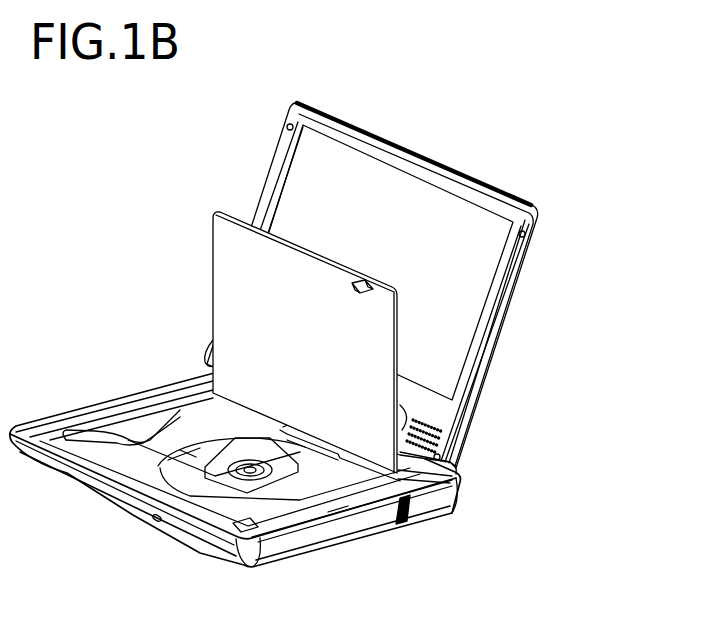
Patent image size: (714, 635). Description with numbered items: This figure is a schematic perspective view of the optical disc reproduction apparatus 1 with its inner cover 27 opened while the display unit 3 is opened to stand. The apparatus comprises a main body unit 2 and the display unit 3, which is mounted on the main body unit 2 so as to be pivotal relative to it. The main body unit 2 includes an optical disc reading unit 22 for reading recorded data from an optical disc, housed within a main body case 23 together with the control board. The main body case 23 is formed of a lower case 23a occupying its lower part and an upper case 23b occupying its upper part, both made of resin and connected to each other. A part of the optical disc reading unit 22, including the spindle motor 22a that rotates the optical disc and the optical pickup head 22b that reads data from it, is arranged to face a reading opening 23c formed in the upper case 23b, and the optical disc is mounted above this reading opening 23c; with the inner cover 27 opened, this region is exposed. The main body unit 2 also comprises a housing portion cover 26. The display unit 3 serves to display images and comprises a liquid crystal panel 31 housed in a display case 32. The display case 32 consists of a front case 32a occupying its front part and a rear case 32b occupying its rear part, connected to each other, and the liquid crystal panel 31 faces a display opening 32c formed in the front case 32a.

The optical disc reproduction apparatus 1 is at (135, 117).
The main body unit 2 is at (187, 543).
The display unit 3 is at (428, 153).
The optical disc reading unit 22 is at (83, 428).
The spindle motor 22a is at (243, 462).
The optical pickup head 22b is at (183, 440).
The main body case 23 is at (383, 537).
The lower case 23a is at (300, 545).
The upper case 23b is at (330, 520).
The reading opening 23c is at (153, 493).
The housing portion cover 26 is at (205, 385).
The inner cover 27 is at (237, 277).
The liquid crystal panel 31 is at (303, 202).
The display case 32 is at (545, 213).
The front case 32a is at (513, 263).
The rear case 32b is at (533, 252).
The display opening 32c is at (468, 228).